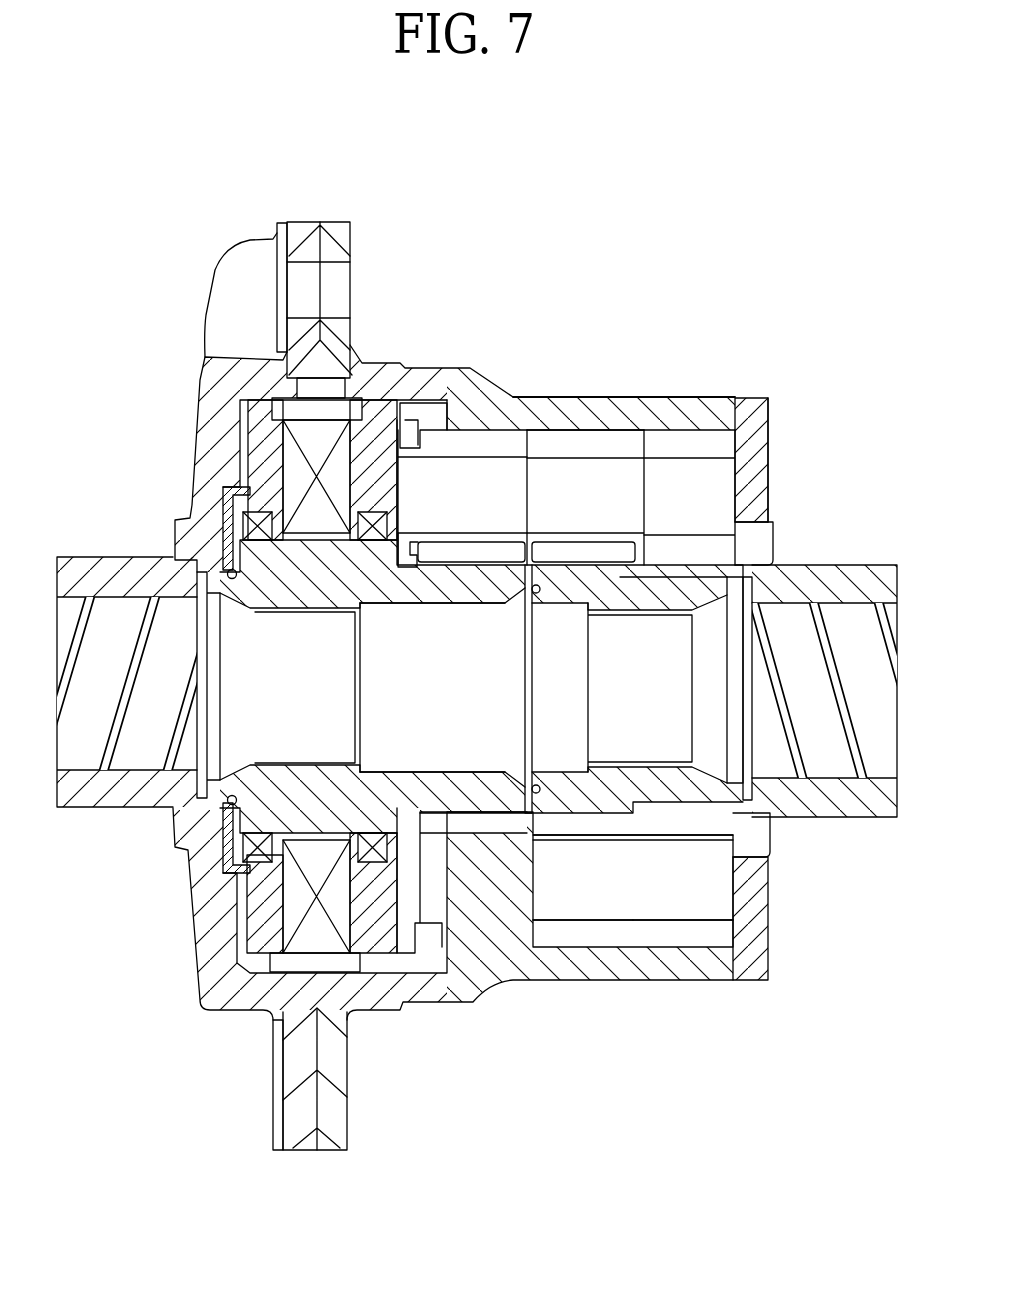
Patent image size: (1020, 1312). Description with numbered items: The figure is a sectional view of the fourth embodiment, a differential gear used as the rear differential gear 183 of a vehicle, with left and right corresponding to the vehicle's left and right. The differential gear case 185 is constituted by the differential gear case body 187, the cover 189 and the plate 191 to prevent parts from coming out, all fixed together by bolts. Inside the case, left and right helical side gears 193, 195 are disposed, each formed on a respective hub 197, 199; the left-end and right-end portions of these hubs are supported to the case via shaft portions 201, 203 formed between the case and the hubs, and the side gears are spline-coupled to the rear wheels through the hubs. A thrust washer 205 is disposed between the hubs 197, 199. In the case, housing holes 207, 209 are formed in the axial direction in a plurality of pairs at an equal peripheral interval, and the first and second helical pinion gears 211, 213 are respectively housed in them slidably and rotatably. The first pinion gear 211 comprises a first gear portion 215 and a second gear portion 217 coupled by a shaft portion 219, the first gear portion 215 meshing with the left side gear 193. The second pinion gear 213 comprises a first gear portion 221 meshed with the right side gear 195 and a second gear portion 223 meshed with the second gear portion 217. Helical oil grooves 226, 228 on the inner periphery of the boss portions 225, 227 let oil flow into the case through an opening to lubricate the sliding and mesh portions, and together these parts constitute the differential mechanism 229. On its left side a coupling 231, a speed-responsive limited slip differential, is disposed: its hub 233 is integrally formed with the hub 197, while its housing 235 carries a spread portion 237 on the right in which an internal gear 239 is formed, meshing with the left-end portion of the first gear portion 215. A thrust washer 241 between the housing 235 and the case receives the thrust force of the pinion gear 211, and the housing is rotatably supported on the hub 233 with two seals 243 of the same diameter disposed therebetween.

The rear differential gear 183 is at (750, 228).
The differential gear case 185 is at (320, 218).
The differential gear case body 187 is at (487, 392).
The cover 189 is at (190, 440).
The plate 191 is at (768, 447).
The left helical side gear 193 is at (455, 815).
The right helical side gear 195 is at (620, 552).
The hub 197 is at (392, 775).
The hub 199 is at (614, 780).
The shaft portion 201 is at (228, 776).
The shaft portion 203 is at (672, 820).
The thrust washer 205 is at (535, 773).
The housing hole 207 is at (598, 430).
The housing hole 209 is at (605, 947).
The first helical pinion gear 211 is at (750, 419).
The second helical pinion gear 213 is at (752, 972).
The first gear portion 215 is at (478, 447).
The second gear portion 217 is at (688, 447).
The shaft portion 219 is at (562, 502).
The first gear portion 221 is at (595, 935).
The second gear portion 223 is at (668, 935).
The boss portion 225 is at (78, 556).
The helical oil groove 226 is at (108, 753).
The boss portion 227 is at (862, 568).
The helical oil groove 228 is at (862, 765).
The differential mechanism 229 is at (694, 362).
The coupling 231 is at (186, 390).
The hub 233 is at (322, 592).
The housing 235 is at (344, 398).
The spread portion 237 is at (423, 402).
The internal gear 239 is at (430, 945).
The thrust washer 241 is at (226, 512).
The seal 243 is at (262, 560).